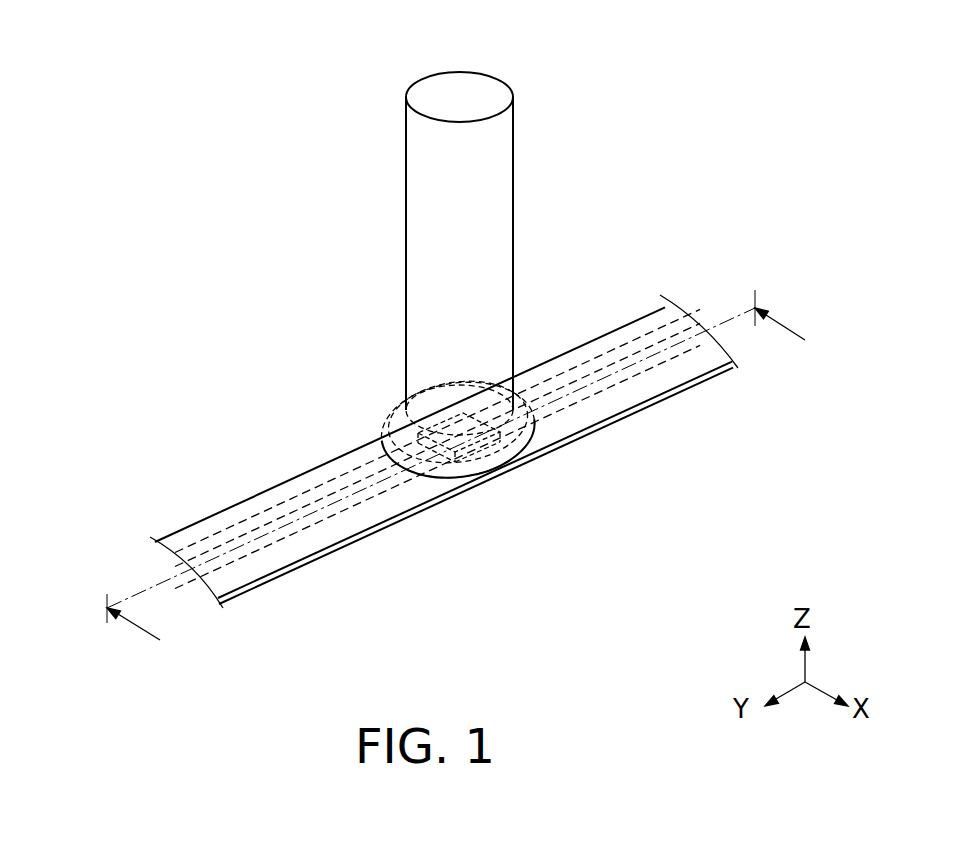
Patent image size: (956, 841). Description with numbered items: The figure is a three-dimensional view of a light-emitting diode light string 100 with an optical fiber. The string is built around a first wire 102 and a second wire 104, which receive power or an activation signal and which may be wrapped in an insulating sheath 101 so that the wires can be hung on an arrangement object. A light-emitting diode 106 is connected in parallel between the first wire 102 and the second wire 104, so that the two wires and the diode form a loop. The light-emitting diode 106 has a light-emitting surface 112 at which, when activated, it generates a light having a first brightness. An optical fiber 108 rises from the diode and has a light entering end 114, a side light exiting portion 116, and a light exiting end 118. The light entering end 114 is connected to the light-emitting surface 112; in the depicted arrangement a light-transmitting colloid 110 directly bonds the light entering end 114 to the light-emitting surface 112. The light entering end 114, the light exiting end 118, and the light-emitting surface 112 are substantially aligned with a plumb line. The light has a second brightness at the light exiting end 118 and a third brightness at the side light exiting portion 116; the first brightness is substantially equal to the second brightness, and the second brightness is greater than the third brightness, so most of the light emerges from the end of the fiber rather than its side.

The light-emitting diode light string with an optical fiber 100 is at (70, 66).
The insulating sheath 101 is at (695, 380).
The first wire 102 is at (248, 532).
The second wire 104 is at (265, 548).
The light-emitting diode 106 is at (437, 452).
The optical fiber 108 is at (406, 165).
The light-transmitting colloid 110 is at (400, 420).
The light-emitting surface 112 is at (454, 416).
The light entering end 114 is at (486, 473).
The side light exiting portion 116 is at (484, 249).
The light exiting end 118 is at (485, 102).